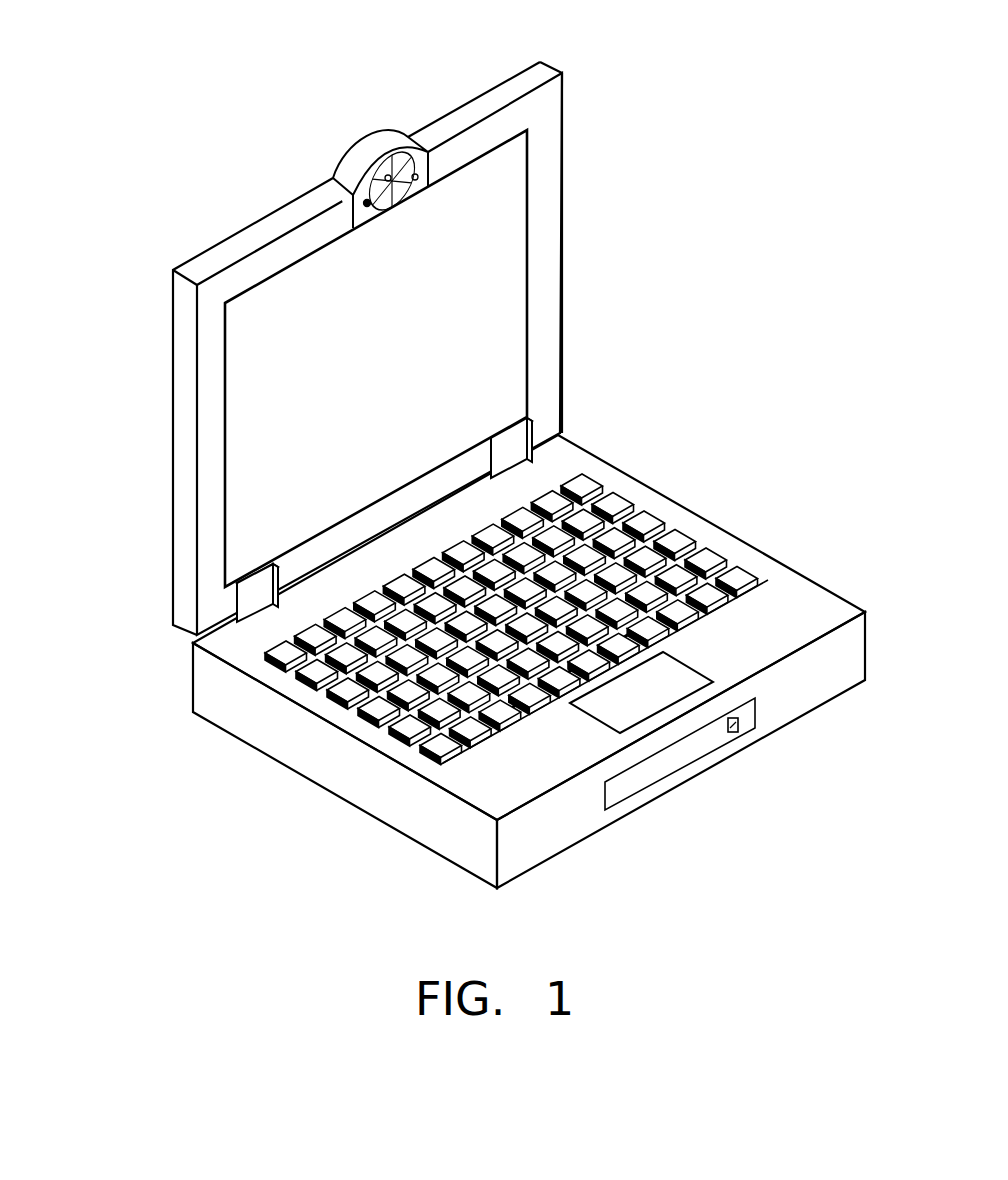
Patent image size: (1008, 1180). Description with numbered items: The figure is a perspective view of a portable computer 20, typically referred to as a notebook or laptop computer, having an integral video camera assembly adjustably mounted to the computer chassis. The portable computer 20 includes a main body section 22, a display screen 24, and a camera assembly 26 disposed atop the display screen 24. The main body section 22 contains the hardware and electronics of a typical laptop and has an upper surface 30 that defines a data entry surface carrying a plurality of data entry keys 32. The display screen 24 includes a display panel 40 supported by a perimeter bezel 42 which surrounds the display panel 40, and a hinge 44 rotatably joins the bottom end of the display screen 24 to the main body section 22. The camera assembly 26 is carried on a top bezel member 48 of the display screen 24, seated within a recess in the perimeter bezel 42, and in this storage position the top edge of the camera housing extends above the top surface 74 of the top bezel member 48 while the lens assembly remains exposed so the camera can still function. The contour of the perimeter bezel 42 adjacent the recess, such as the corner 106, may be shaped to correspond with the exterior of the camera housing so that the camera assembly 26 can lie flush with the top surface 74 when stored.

The portable computer 20 is at (677, 330).
The main body section 22 is at (748, 542).
The display screen 24 is at (172, 453).
The camera assembly 26 is at (388, 145).
The upper surface 30 is at (783, 615).
The data entry keys 32 is at (652, 548).
The display panel 40 is at (255, 512).
The perimeter bezel 42 is at (212, 368).
The hinge 44 is at (568, 421).
The top bezel member 48 is at (493, 132).
The top surface 74 is at (245, 247).
The corner 106 is at (562, 73).